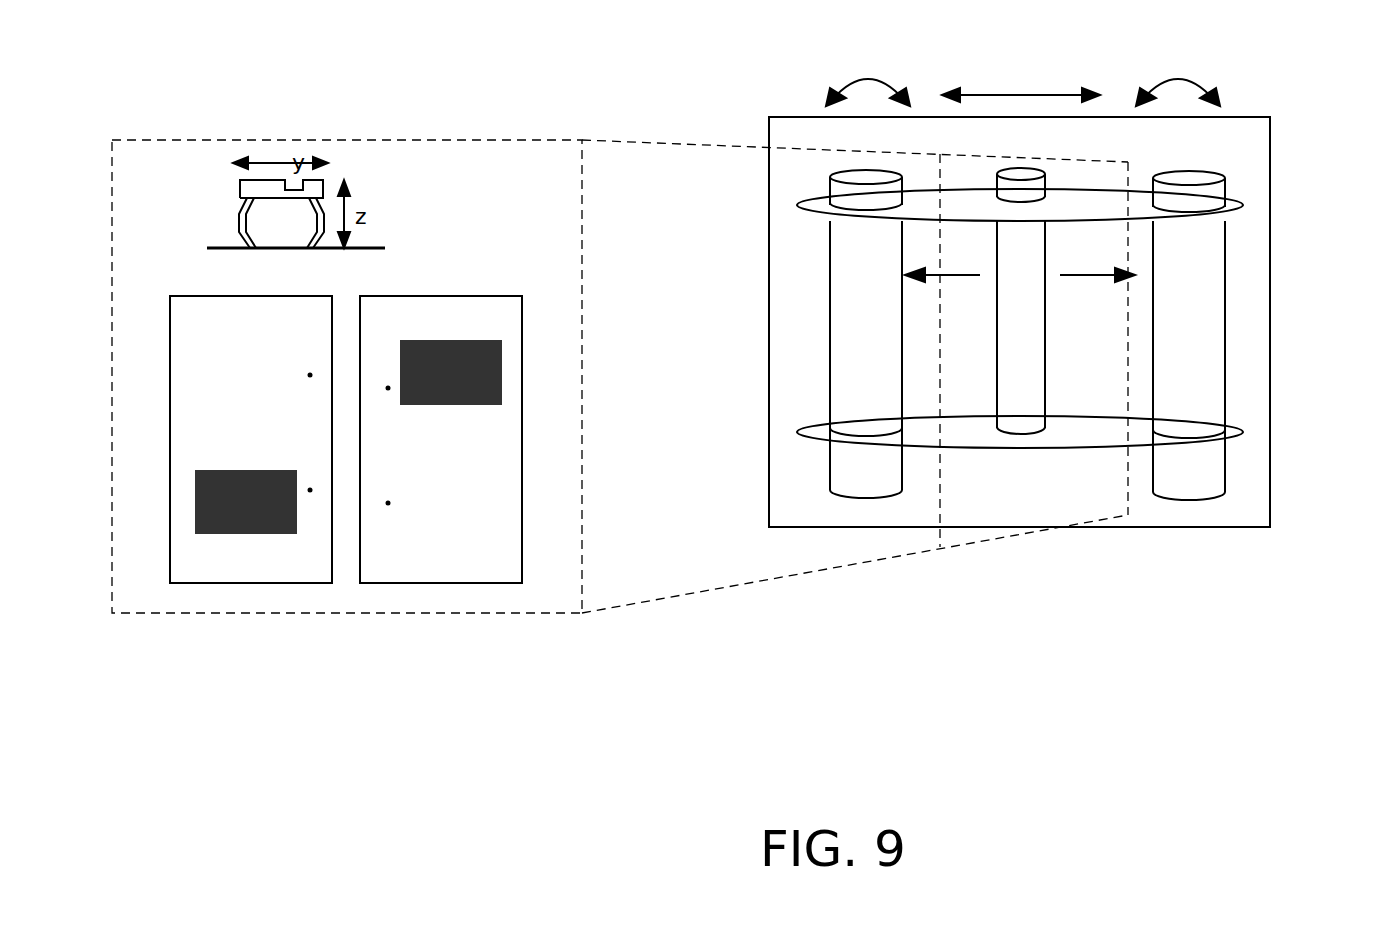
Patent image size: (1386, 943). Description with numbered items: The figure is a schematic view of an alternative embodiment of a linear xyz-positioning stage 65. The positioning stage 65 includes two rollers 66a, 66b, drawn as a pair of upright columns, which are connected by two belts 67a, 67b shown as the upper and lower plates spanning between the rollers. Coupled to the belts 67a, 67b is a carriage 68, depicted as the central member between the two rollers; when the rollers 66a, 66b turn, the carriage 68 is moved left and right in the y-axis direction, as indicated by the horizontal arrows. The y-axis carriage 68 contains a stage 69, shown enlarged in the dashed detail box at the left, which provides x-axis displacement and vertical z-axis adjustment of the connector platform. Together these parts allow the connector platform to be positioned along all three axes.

The linear xyz-positioning stage 65 is at (1012, 652).
The roller 66a is at (830, 250).
The roller 66b is at (1212, 245).
The belt 67a is at (1090, 192).
The belt 67b is at (1108, 450).
The carriage 68 is at (998, 380).
The stage 69 is at (440, 296).